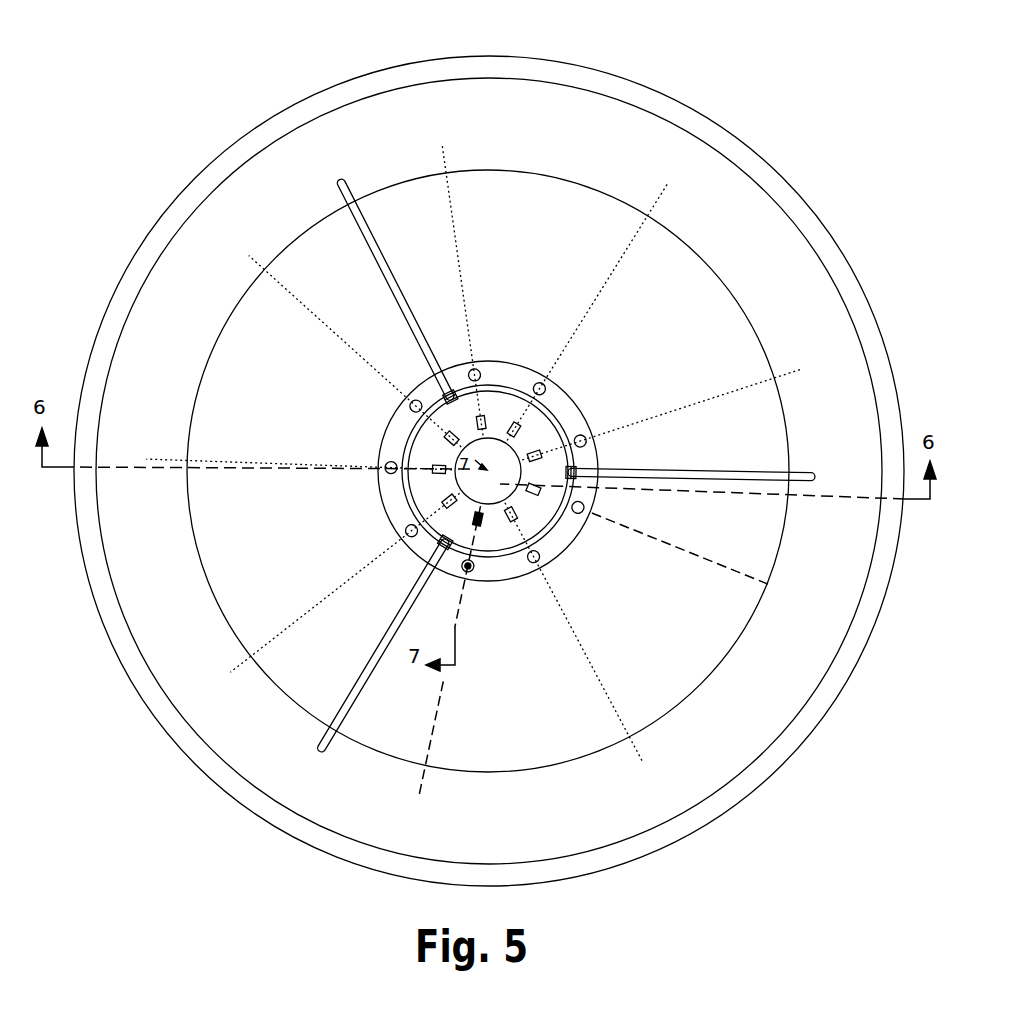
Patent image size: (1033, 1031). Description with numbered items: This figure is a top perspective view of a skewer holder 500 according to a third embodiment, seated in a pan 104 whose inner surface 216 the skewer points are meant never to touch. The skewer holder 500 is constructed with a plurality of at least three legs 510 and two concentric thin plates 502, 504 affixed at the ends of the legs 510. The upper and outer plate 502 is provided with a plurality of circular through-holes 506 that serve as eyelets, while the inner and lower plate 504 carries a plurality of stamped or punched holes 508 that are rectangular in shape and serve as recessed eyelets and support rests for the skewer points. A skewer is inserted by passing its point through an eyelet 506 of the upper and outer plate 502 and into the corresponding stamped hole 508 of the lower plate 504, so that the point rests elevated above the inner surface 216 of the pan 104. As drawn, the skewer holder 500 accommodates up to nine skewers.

The skewer holder 500 is at (427, 112).
The pan 104 is at (793, 187).
The inner surface 216 is at (673, 257).
The upper and outer plate 502 is at (525, 366).
The inner and lower plate 504 is at (489, 530).
The circular through-holes 506 is at (477, 370).
The stamped holes 508 is at (450, 431).
The legs 510 is at (393, 281).